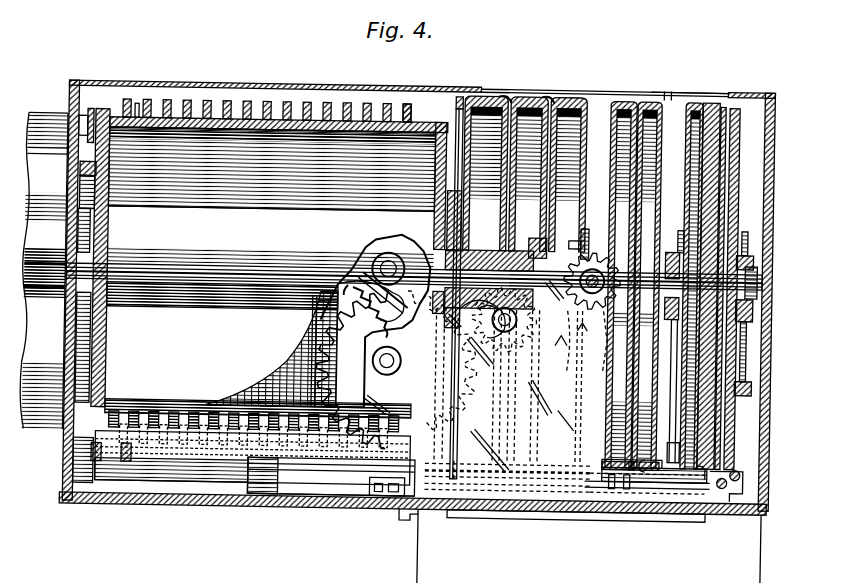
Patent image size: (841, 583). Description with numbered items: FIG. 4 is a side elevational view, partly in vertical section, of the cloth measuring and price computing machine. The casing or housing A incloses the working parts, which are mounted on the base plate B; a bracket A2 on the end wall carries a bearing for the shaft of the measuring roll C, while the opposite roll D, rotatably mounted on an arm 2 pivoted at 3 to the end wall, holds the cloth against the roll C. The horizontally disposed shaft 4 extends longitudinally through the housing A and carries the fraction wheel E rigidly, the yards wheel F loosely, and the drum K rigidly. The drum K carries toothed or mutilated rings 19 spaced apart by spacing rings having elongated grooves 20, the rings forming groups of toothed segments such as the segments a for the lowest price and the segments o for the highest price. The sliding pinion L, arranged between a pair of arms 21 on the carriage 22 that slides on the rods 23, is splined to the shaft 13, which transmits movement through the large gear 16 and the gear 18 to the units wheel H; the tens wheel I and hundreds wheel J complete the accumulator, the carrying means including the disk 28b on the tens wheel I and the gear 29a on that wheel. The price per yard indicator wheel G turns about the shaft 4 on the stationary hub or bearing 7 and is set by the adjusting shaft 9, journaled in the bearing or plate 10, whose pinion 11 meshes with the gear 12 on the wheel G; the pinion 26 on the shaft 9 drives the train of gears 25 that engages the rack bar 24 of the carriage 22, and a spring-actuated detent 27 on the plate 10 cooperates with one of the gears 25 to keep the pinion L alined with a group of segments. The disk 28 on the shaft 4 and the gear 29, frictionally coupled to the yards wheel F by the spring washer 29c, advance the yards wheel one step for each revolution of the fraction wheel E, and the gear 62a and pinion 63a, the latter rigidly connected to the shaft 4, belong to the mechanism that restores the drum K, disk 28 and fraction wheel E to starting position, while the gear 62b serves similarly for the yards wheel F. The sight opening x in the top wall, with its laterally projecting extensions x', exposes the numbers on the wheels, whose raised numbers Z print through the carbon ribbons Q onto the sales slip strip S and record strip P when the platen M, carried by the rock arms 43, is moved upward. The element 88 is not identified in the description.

The casing A is at (201, 78).
The bracket A2 is at (60, 445).
The base plate B is at (296, 506).
The measuring roll C is at (33, 128).
The roll D is at (40, 296).
The fraction wheel E is at (640, 92).
The yards wheel F is at (684, 90).
The price per yard indicator wheel G is at (608, 92).
The units wheel H is at (474, 95).
The tens wheel I is at (519, 95).
The hundreds wheel J is at (556, 95).
The drum K is at (269, 264).
The adjustable pinion L is at (60, 468).
The platen M is at (671, 478).
The record strip P is at (599, 464).
The carbon ribbons Q is at (623, 470).
The sales slip strip S is at (499, 505).
The raised numbers Z is at (642, 452).
The toothed segments o is at (127, 95).
The toothed segments a is at (396, 96).
The sight opening x is at (699, 73).
The extensions x' is at (674, 119).
The arm 2 is at (56, 182).
The pivot 3 is at (48, 395).
The shaft 4 is at (190, 277).
The stationary hub 7 is at (626, 248).
The adjusting shaft 9 is at (574, 286).
The bearing plate 10 is at (455, 486).
The pinion 11 is at (592, 302).
The gear 12 is at (597, 230).
The shaft 13 is at (262, 476).
The large gear 16 is at (443, 217).
The gear 18 is at (449, 90).
The toothed rings 19 is at (254, 100).
The elongated grooves 20 is at (304, 105).
The arms 21 is at (92, 460).
The carriage 22 is at (192, 478).
The rods 23 is at (337, 466).
The rack bar 24 is at (300, 456).
The train of gears 25 is at (318, 345).
The pinion 26 is at (502, 318).
The spring-actuated detent 27 is at (325, 290).
The disk 28 is at (762, 100).
The disk 28b is at (543, 93).
The gear 29 is at (712, 136).
The gear 29a is at (495, 93).
The spring washer 29c is at (730, 188).
The rock arms 43 is at (705, 468).
The gear 62a is at (742, 224).
The gear 62b is at (646, 224).
The pinion 63a is at (744, 246).
The latch 88 is at (77, 150).